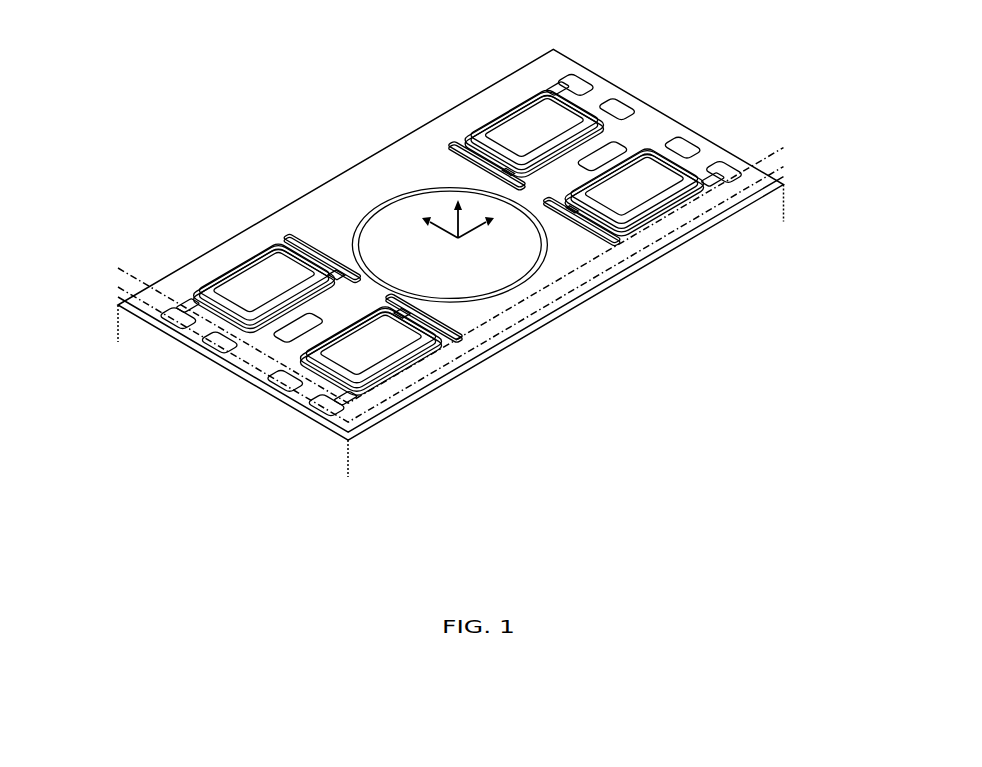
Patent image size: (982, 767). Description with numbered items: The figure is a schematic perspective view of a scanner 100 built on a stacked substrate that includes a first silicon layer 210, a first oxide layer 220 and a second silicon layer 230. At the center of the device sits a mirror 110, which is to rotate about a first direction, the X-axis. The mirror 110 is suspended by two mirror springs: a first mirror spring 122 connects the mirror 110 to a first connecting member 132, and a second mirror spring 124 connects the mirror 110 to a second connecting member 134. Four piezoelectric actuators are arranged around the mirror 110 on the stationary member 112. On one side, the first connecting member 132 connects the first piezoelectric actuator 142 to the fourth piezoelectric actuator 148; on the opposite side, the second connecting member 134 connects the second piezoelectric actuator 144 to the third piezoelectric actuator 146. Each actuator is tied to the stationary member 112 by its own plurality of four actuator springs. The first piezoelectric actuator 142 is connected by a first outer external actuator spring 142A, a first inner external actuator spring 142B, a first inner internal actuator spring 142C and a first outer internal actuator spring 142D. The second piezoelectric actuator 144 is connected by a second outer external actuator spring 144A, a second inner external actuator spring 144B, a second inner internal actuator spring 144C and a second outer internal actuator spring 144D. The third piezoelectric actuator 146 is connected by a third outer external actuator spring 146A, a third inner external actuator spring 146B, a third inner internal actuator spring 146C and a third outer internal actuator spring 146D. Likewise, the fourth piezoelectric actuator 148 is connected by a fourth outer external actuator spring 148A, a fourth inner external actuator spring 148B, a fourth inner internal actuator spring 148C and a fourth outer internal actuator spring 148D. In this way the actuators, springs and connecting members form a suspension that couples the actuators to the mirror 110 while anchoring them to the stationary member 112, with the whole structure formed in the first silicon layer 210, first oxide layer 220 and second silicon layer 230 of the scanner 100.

The scanner 100 is at (448, 260).
The mirror 110 is at (491, 244).
The stationary member 112 is at (482, 317).
The first mirror spring 122 is at (466, 262).
The second mirror spring 124 is at (354, 270).
The first connecting member 132 is at (583, 170).
The second connecting member 134 is at (322, 318).
The first piezoelectric actuator 142 is at (460, 100).
The first outer external actuator spring 142A is at (551, 85).
The first inner external actuator spring 142B is at (455, 136).
The first inner internal actuator spring 142C is at (488, 174).
The first outer internal actuator spring 142D is at (602, 109).
The second piezoelectric actuator 144 is at (197, 224).
The second outer external actuator spring 144A is at (191, 293).
The second inner external actuator spring 144B is at (290, 234).
The second inner internal actuator spring 144C is at (328, 260).
The second outer internal actuator spring 144D is at (236, 327).
The third piezoelectric actuator 146 is at (409, 401).
The third outer external actuator spring 146A is at (354, 408).
The third inner external actuator spring 146B is at (453, 345).
The third inner internal actuator spring 146C is at (413, 327).
The third outer internal actuator spring 146D is at (303, 369).
The fourth piezoelectric actuator 148 is at (671, 256).
The fourth outer external actuator spring 148A is at (733, 237).
The fourth inner external actuator spring 148B is at (621, 255).
The fourth inner internal actuator spring 148C is at (574, 228).
The fourth outer internal actuator spring 148D is at (674, 158).
The first silicon layer 210 is at (760, 227).
The first oxide layer 220 is at (783, 210).
The second silicon layer 230 is at (783, 188).